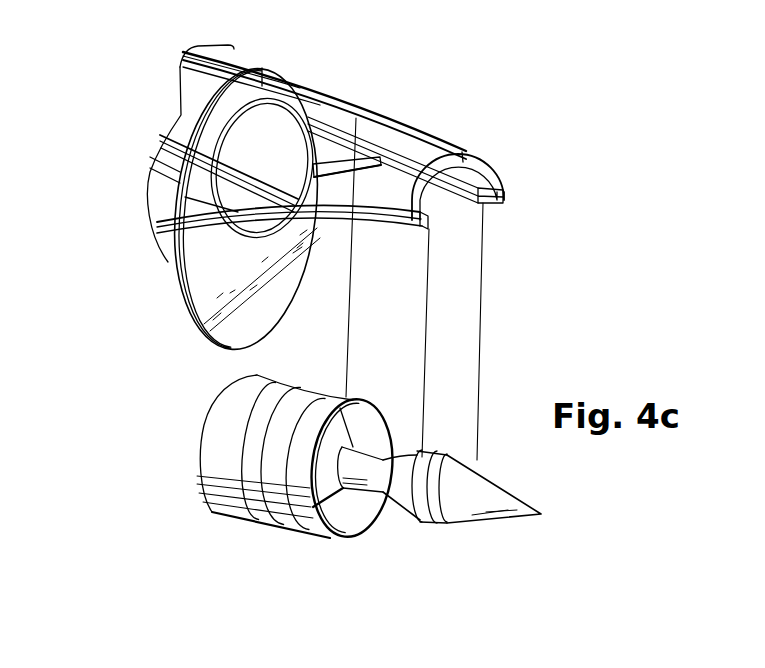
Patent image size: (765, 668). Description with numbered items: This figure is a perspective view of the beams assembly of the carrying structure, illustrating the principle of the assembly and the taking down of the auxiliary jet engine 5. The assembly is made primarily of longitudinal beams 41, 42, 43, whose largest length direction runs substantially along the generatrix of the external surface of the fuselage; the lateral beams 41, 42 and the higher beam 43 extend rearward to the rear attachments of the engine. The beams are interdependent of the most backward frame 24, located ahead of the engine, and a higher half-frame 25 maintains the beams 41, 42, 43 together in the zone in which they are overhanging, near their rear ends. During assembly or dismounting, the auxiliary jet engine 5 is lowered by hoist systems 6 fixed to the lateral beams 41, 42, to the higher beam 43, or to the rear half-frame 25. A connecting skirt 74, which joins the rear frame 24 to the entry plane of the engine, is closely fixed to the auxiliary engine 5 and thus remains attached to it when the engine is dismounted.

The auxiliary jet engine 5 is at (277, 503).
The hoist systems 6 is at (423, 298).
The most backward frame 24 is at (166, 286).
The higher half-frame 25 is at (484, 153).
The longitudinal beam 41 is at (377, 222).
The longitudinal beam 42 is at (462, 200).
The longitudinal beam 43 is at (406, 126).
The connecting skirt 74 is at (222, 498).